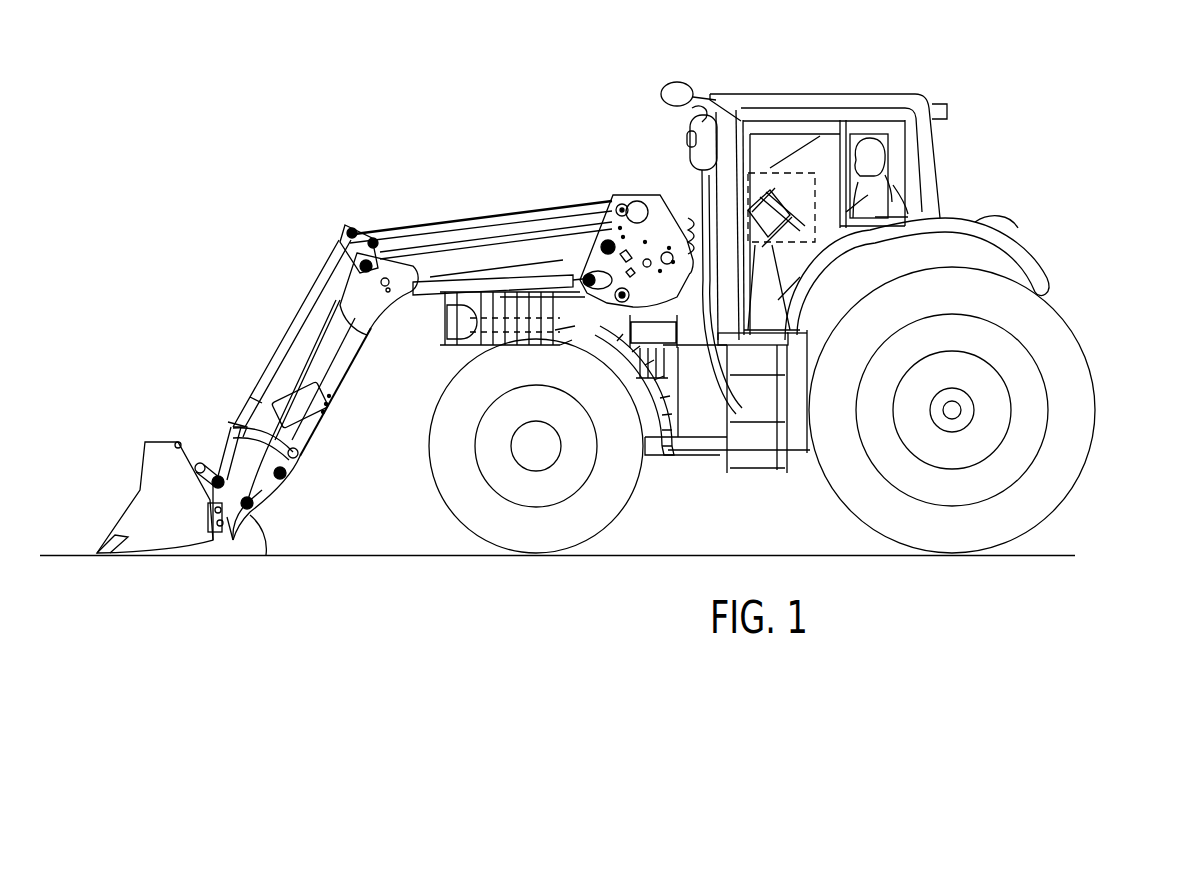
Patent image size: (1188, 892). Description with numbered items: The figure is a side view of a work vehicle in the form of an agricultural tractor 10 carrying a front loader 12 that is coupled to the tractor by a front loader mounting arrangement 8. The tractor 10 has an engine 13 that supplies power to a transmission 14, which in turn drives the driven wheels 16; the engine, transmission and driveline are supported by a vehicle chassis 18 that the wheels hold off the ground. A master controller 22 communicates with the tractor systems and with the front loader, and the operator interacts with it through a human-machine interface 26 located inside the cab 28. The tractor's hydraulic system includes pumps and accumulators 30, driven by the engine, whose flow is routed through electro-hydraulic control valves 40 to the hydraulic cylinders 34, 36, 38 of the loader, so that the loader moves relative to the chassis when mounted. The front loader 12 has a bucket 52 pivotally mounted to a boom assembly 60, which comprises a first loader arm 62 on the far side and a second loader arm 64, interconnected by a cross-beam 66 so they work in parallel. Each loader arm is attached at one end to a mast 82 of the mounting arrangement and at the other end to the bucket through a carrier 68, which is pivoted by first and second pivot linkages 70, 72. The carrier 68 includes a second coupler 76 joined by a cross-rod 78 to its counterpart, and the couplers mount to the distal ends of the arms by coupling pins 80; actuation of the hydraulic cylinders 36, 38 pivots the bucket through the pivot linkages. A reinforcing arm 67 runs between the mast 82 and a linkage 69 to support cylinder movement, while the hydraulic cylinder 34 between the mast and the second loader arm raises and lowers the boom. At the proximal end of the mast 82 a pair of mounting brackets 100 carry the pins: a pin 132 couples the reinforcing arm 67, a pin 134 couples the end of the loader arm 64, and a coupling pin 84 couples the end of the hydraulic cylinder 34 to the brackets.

The front loader mounting arrangement 8 is at (609, 186).
The tractor 10 is at (919, 76).
The front loader 12 is at (650, 452).
The engine 13 is at (448, 300).
The transmission 14 is at (500, 250).
The wheels 16 is at (535, 446).
The vehicle chassis 18 is at (800, 470).
The master controller 22 is at (535, 285).
The human-machine interface 26 is at (793, 173).
The cab 28 is at (788, 100).
The pumps and accumulators 30 is at (664, 410).
The hydraulic cylinder 34 is at (435, 300).
The hydraulic cylinder 36 is at (287, 322).
The hydraulic cylinder 38 is at (277, 352).
The electro-hydraulic control valves 40 is at (553, 335).
The bucket 52 is at (152, 513).
The boom assembly 60 is at (295, 490).
The first loader arm 62 is at (287, 322).
The second loader arm 64 is at (314, 469).
The cross-beam 66 is at (258, 488).
The reinforcing arm 67 is at (428, 238).
The carrier 68 is at (252, 536).
The linkage 69 is at (356, 235).
The first pivot linkage 70 is at (217, 437).
The second pivot linkage 72 is at (218, 478).
The second coupler 76 is at (228, 516).
The cross-rod 78 is at (212, 504).
The coupling pins 80 is at (280, 525).
The mast 82 is at (654, 182).
The coupling pin 84 is at (584, 277).
The mounting brackets 100 is at (676, 214).
The pin 132 is at (621, 205).
The pin 134 is at (606, 184).